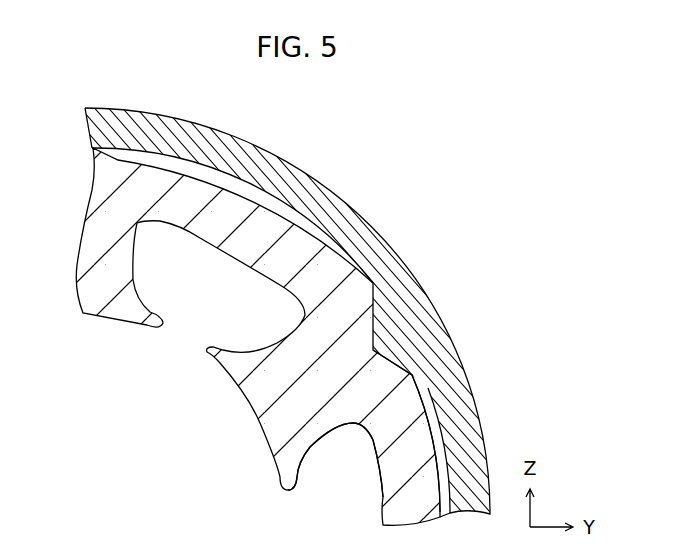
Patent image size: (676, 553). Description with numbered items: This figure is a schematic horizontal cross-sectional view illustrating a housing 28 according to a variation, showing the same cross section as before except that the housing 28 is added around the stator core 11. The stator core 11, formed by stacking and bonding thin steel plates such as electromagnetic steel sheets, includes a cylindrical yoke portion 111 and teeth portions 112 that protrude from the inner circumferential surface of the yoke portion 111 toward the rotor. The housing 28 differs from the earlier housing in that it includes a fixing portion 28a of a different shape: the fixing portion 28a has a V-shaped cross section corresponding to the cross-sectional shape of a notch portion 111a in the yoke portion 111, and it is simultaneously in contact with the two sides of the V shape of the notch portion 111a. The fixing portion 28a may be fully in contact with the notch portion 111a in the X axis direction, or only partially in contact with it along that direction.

The stator core 11 is at (228, 208).
The housing 28 is at (300, 187).
The fixing portion 28a is at (390, 333).
The yoke portion 111 is at (432, 441).
The notch portion 111a is at (397, 352).
The teeth portions 112 is at (328, 417).